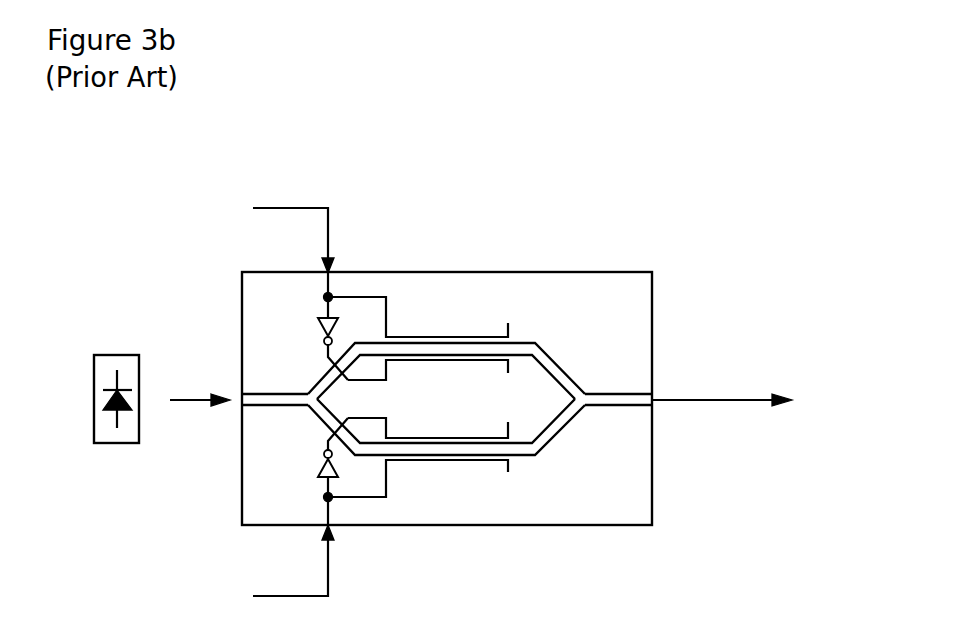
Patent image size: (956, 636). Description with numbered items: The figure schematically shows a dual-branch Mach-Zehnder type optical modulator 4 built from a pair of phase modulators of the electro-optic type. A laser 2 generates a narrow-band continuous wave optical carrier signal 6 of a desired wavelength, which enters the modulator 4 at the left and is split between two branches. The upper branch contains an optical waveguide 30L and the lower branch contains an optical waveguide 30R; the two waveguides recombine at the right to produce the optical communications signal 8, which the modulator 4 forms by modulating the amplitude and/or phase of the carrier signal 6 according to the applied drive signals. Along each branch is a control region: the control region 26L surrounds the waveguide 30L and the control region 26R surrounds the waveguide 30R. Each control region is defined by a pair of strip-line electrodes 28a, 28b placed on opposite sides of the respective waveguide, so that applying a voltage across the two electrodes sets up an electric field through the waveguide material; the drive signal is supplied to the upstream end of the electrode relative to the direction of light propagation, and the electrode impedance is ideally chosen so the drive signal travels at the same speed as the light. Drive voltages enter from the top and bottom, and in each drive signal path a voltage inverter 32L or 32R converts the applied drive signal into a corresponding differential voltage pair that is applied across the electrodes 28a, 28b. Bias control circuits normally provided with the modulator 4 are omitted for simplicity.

The laser 2 is at (128, 355).
The optical modulator 4 is at (620, 272).
The optical carrier signal 6 is at (196, 400).
The optical communications signal 8 is at (727, 400).
The control region 26L is at (488, 300).
The control region 26R is at (478, 489).
The electrode 28a is at (456, 337).
The electrode 28b is at (452, 362).
The optical waveguide 30L is at (545, 355).
The optical waveguide 30R is at (555, 436).
The voltage inverter 32L is at (322, 328).
The voltage inverter 32R is at (322, 470).